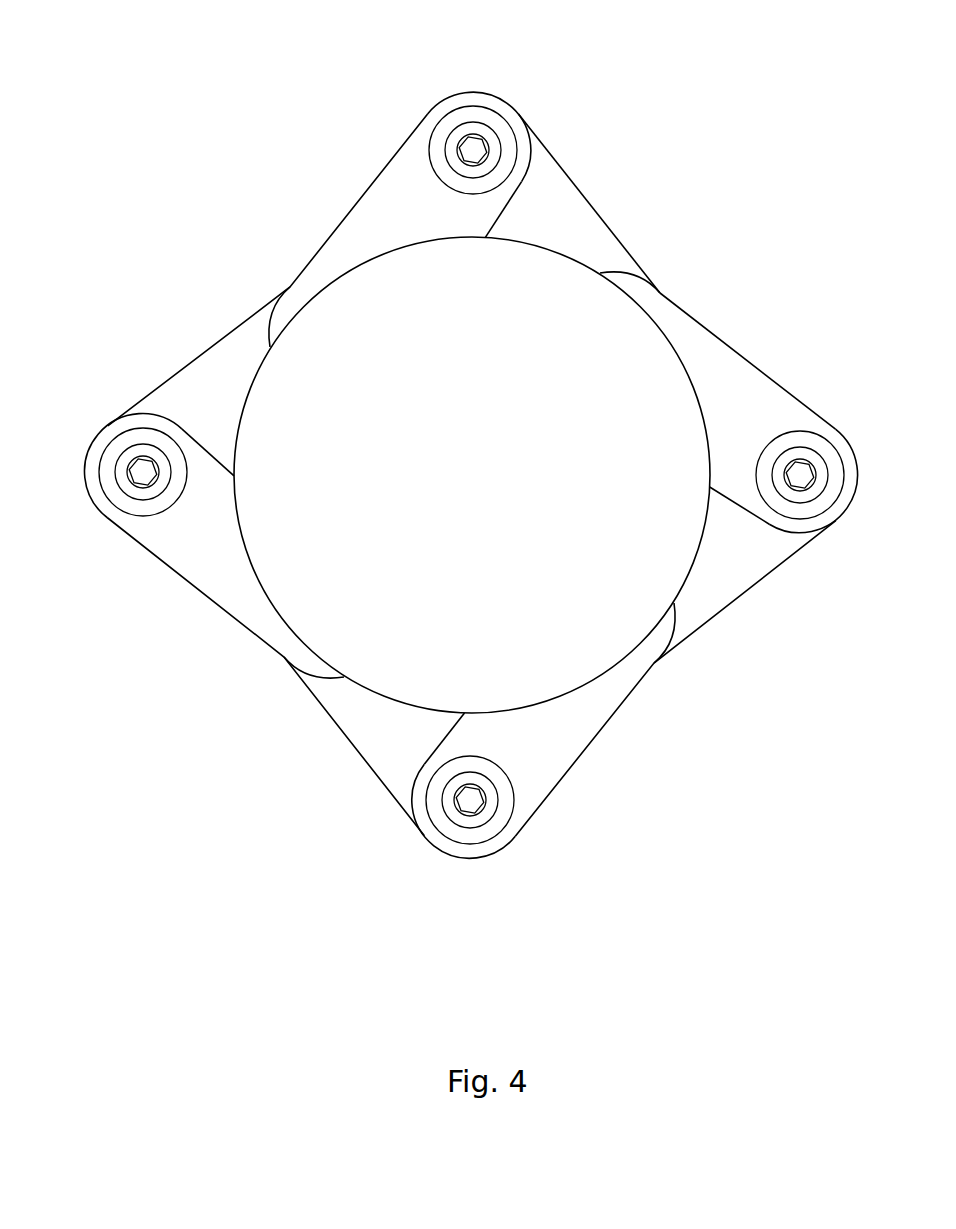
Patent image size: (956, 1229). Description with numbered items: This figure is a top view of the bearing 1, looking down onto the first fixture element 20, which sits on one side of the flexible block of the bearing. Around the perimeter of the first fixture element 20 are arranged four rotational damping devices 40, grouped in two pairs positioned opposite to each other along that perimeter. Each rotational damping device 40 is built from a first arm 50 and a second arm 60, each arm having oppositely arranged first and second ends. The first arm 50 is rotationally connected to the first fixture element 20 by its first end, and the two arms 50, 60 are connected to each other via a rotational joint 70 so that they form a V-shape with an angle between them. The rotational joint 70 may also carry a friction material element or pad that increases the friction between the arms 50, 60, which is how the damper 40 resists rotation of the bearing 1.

The bearing 1 is at (474, 475).
The first fixture element 20 is at (320, 323).
The rotational damping device 40 is at (471, 486).
The first arm 50 is at (740, 370).
The second arm 60 is at (563, 187).
The rotational joint 70 is at (465, 140).